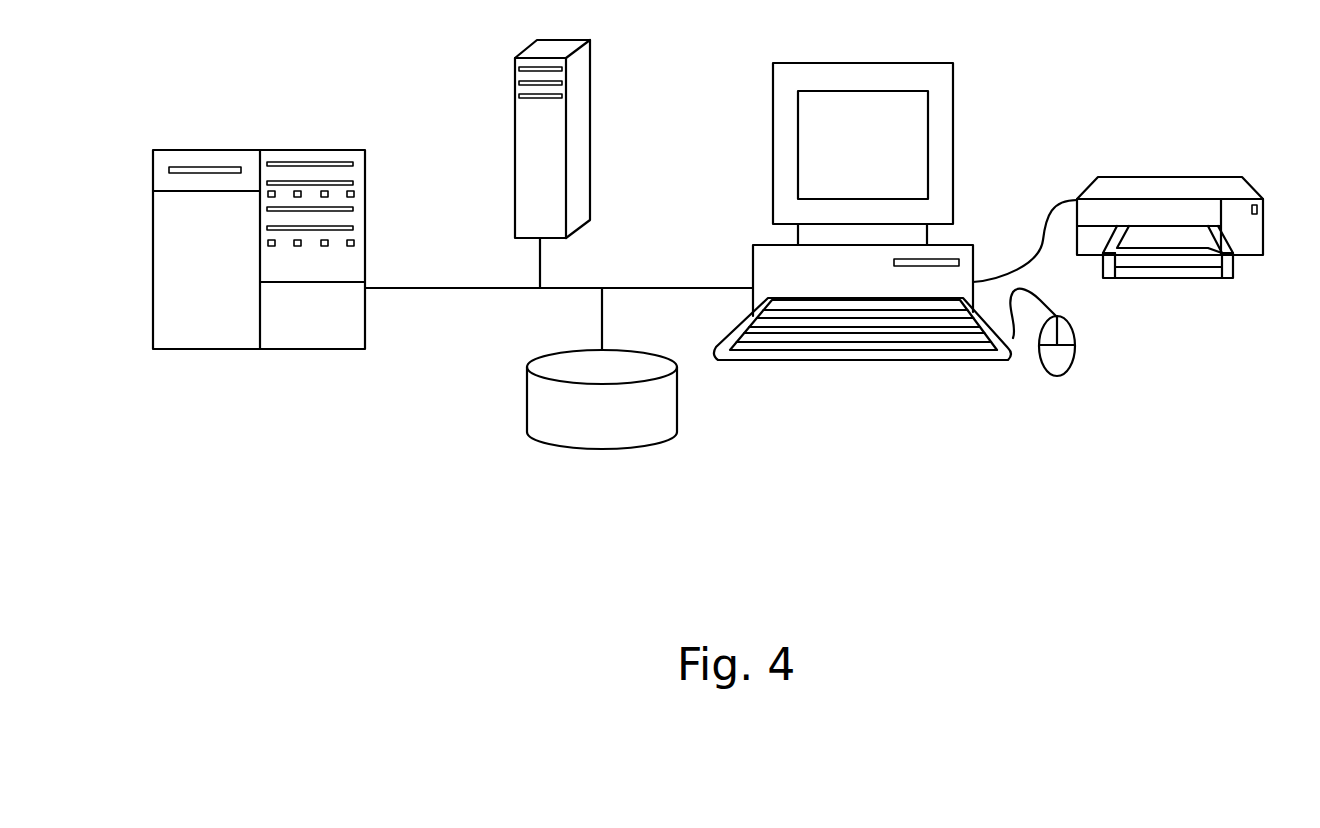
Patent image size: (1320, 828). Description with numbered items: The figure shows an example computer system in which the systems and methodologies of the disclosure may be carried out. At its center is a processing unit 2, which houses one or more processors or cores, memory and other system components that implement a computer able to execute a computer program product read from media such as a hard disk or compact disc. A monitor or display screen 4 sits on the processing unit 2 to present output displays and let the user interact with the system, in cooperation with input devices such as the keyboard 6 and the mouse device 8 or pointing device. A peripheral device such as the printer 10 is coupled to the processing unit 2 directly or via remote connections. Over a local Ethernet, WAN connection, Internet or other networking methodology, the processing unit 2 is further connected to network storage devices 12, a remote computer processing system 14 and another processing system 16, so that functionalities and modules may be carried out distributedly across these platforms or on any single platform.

The processing unit 2 is at (753, 270).
The monitor or display screen 4 is at (955, 139).
The keyboard 6 is at (920, 362).
The mouse device 8 is at (1077, 362).
The printer 10 is at (1170, 177).
The network storage devices 12 is at (618, 449).
The remote computer processing system 14 is at (590, 127).
The processing system 16 is at (302, 150).